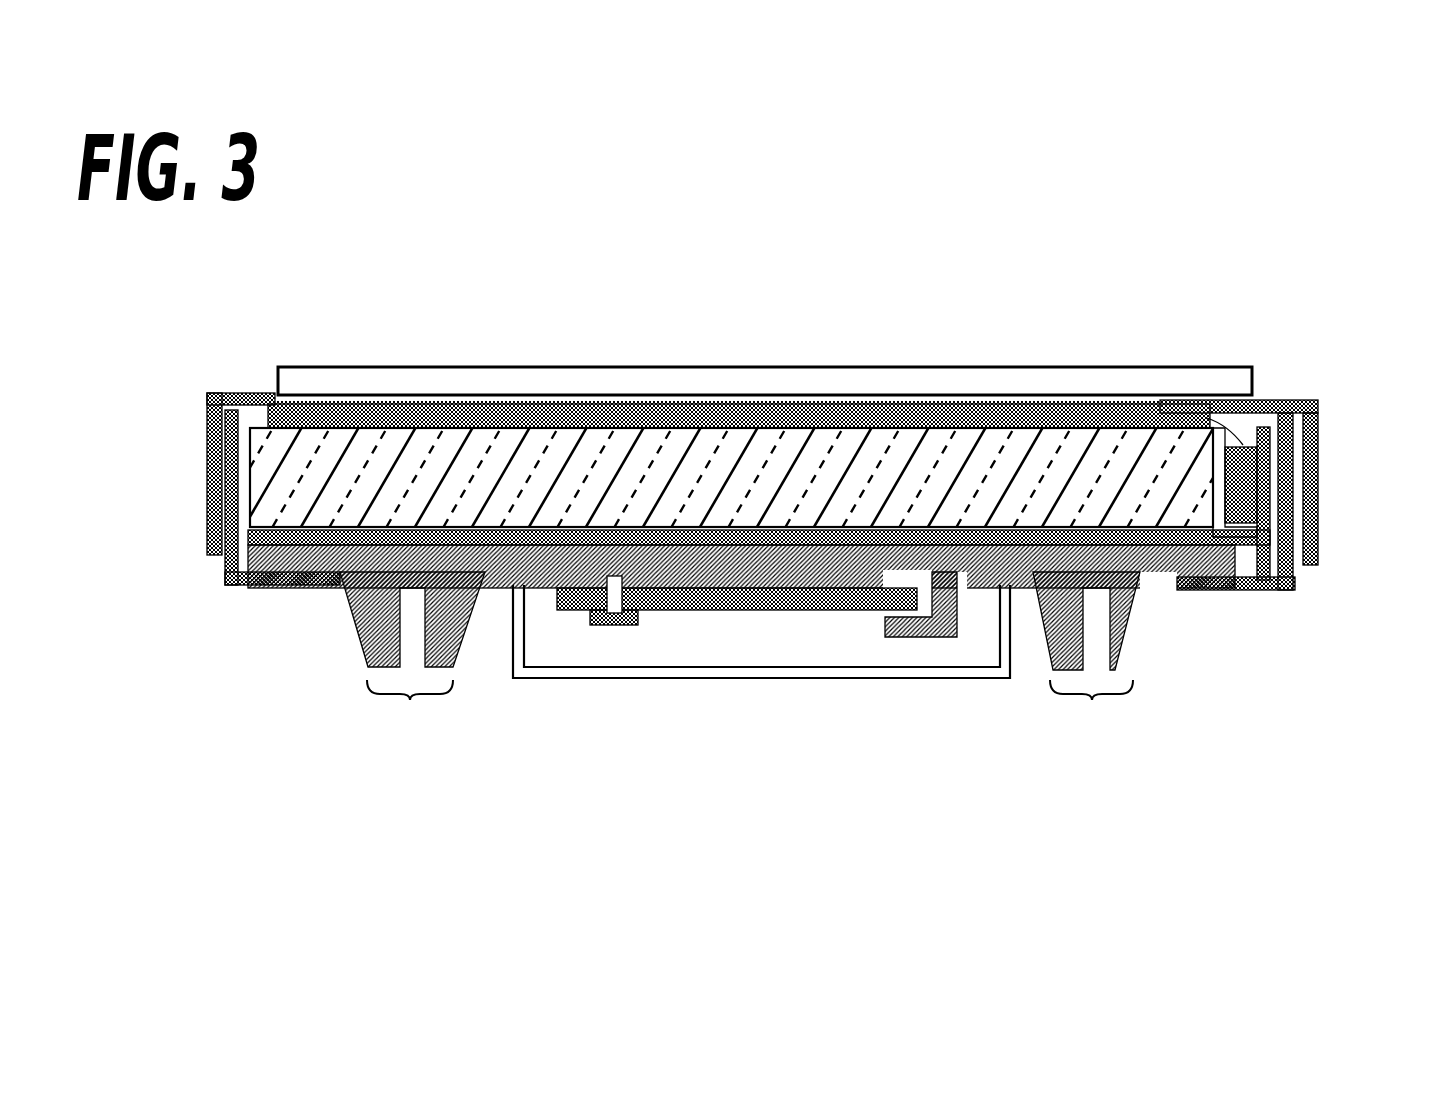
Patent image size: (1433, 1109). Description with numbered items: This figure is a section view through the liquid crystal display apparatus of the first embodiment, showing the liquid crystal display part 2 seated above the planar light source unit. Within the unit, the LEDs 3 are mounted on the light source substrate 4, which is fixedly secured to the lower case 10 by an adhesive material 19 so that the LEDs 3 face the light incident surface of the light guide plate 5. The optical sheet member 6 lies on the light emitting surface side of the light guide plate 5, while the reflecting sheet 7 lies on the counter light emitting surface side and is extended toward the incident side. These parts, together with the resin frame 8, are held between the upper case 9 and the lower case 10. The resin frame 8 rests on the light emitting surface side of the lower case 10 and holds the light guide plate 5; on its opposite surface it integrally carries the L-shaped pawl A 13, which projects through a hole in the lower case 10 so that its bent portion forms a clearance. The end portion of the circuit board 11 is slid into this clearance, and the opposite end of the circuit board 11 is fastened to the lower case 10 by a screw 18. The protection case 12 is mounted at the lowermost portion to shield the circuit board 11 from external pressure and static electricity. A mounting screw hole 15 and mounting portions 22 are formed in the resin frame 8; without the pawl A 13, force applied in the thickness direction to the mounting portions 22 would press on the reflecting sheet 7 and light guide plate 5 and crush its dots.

The liquid crystal display part 2 is at (1242, 367).
The LEDs 3 is at (1200, 393).
The light source substrate 4 is at (1270, 592).
The light guide plate 5 is at (706, 458).
The optical sheet member 6 is at (447, 428).
The reflecting sheet 7 is at (207, 533).
The resin frame 8 is at (1165, 580).
The upper case 9 is at (1320, 422).
The lower case 10 is at (225, 578).
The circuit board 11 is at (780, 611).
The protection case 12 is at (690, 678).
The L-shaped pawl A 13 is at (928, 638).
The mounting screw hole 15 is at (365, 665).
The screw 18 is at (608, 626).
The adhesive material 19 is at (1297, 400).
The mounting portions 22 is at (750, 713).